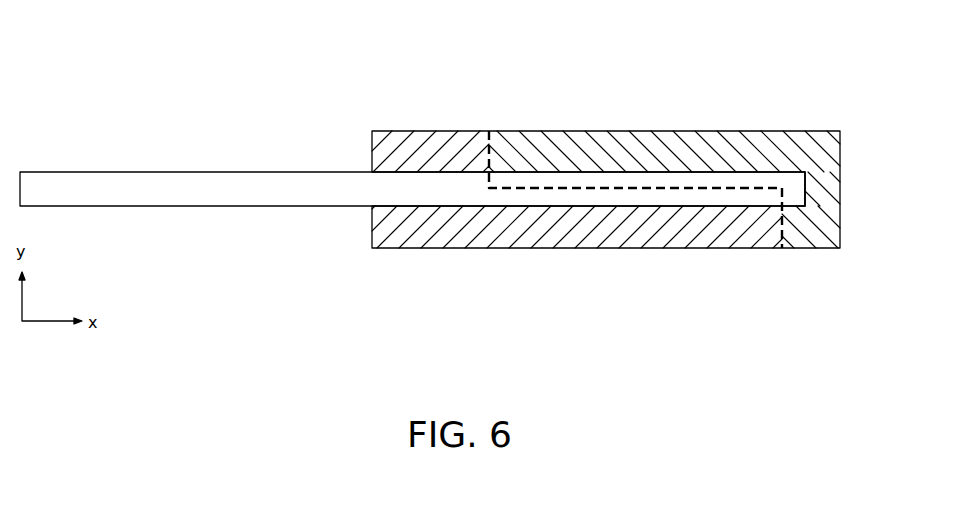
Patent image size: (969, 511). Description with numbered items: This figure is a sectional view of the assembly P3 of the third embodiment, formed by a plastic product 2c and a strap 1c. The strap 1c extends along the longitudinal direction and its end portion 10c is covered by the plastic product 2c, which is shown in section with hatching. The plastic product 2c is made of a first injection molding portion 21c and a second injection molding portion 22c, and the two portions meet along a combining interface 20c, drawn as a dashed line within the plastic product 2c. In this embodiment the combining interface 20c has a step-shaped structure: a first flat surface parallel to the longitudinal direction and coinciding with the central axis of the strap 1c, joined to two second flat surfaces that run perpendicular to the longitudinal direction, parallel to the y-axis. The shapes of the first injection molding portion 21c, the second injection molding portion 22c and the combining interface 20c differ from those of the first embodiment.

The assembly P3 is at (147, 63).
The strap 1c is at (113, 169).
The end portion 10c is at (805, 192).
The plastic product 2c is at (610, 132).
The first injection molding portion 21c is at (372, 150).
The second injection molding portion 22c is at (777, 143).
The combining interface 20c is at (637, 188).